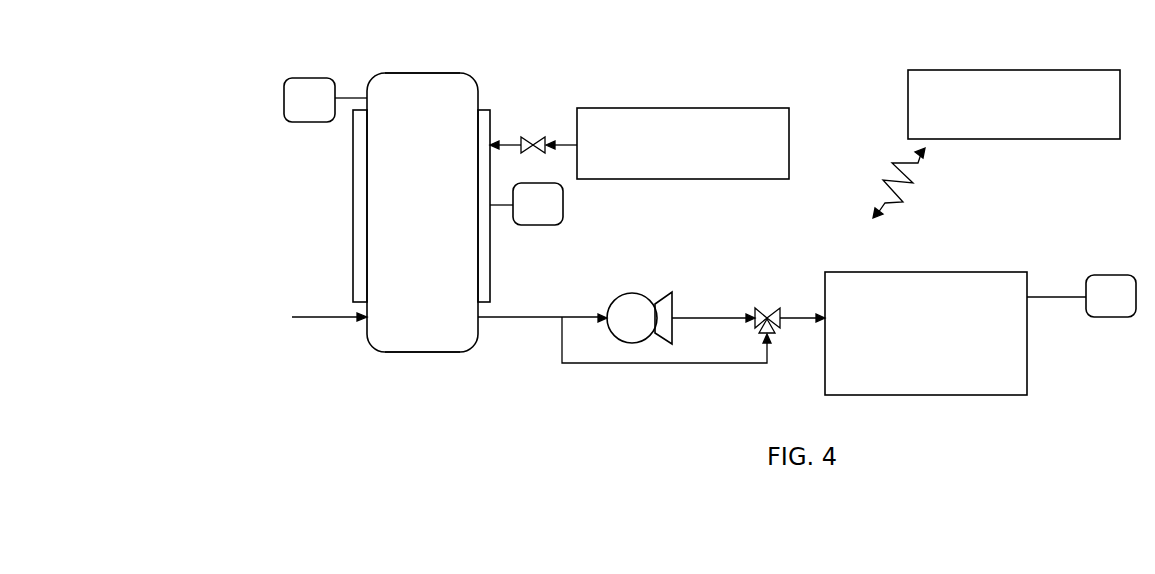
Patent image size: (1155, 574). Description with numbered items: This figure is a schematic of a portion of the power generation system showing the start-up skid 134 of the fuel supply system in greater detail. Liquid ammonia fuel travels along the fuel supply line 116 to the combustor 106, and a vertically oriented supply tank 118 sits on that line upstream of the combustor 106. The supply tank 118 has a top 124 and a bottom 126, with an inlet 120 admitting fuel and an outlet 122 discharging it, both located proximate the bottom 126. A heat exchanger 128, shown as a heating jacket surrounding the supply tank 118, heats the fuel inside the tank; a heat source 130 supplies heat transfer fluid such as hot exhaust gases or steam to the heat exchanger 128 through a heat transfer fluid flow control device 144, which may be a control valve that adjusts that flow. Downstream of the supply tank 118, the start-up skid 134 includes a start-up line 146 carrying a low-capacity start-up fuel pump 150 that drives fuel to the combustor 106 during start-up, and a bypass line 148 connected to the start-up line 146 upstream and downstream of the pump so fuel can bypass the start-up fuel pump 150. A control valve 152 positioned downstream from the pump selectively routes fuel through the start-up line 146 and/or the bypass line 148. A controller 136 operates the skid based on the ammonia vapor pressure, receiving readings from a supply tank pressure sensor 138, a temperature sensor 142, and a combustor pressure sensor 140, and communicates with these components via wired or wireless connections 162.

The combustor 106 is at (905, 346).
The fuel supply line 116 is at (315, 315).
The supply tank 118 is at (401, 187).
The inlet 120 is at (367, 318).
The outlet 122 is at (478, 320).
The top 124 is at (445, 68).
The bottom 126 is at (422, 362).
The heat exchanger 128 is at (353, 163).
The heat source 130 is at (662, 170).
The start-up skid 134 is at (698, 257).
The controller 136 is at (993, 131).
The supply tank pressure sensor 138 is at (291, 112).
The combustor pressure sensor 140 is at (1093, 308).
The temperature sensor 142 is at (520, 216).
The heat transfer fluid flow control device 144 is at (532, 140).
The start-up line 146 is at (722, 315).
The bypass line 148 is at (625, 363).
The start-up fuel pump 150 is at (628, 294).
The control valve 152 is at (768, 312).
The connections 162 is at (905, 177).